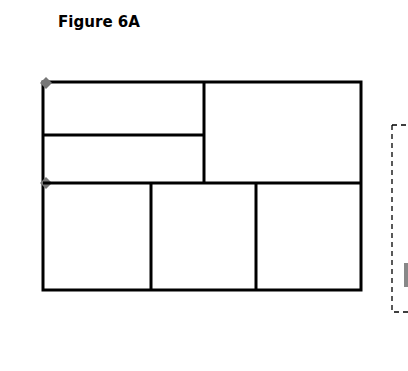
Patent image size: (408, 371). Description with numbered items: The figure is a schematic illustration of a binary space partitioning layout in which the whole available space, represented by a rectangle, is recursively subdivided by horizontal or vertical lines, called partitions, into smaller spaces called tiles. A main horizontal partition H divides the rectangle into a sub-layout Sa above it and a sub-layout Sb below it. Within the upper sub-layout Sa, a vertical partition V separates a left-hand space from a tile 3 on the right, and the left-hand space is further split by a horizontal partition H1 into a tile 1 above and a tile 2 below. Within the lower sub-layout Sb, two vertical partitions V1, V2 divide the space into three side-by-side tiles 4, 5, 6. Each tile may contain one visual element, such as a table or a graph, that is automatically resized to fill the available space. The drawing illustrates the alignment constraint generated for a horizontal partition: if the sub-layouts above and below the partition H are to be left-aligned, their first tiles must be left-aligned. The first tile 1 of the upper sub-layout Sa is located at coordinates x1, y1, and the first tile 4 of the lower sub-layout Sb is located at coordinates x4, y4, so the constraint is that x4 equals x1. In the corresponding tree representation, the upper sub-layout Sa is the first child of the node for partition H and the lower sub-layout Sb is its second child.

The first tile 1 is at (125, 108).
The tile 2 is at (125, 162).
The tile 3 is at (277, 135).
The first tile 4 is at (97, 240).
The tile 5 is at (201, 240).
The tile 6 is at (306, 240).
The horizontal partition H is at (290, 182).
The horizontal partition H1 is at (205, 152).
The vertical partition V is at (170, 134).
The vertical partition V1 is at (152, 250).
The vertical partition V2 is at (257, 252).
The sub-layout above the horizontal partition Sa is at (373, 71).
The sub-layout below the horizontal partition Sb is at (372, 287).
The coordinates of top-left corner x1, y1 is at (44, 79).
The coordinates of bottom-left corner x4, y4 is at (40, 187).